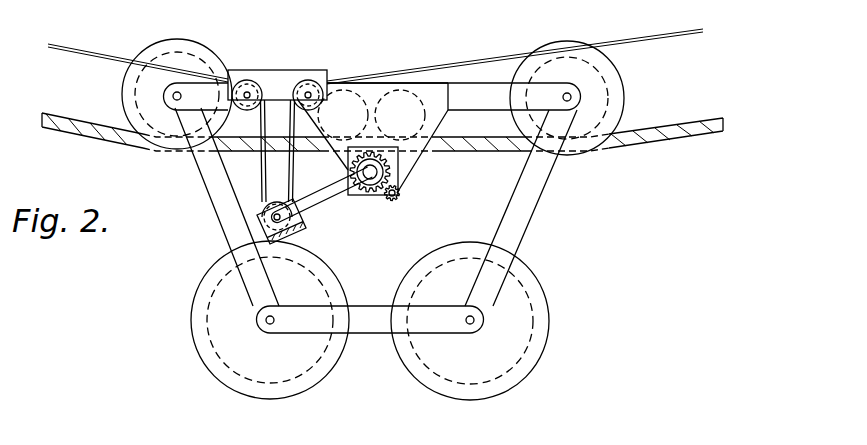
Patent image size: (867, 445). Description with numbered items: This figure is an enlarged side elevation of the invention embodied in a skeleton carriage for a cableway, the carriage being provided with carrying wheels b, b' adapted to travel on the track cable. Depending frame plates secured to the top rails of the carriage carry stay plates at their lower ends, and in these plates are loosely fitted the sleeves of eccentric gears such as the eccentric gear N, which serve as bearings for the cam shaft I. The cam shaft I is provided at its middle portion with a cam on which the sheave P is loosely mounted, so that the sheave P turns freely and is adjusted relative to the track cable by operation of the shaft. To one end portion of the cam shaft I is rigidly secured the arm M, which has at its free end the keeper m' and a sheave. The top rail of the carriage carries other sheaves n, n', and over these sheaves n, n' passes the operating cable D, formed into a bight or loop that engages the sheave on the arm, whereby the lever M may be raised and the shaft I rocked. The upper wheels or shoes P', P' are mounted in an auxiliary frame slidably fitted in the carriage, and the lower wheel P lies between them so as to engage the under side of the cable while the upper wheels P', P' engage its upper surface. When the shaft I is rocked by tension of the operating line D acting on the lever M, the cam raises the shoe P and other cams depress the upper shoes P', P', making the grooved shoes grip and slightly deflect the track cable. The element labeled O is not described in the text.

The operating cable D is at (636, 39).
The carrying wheel b' is at (146, 94).
The carrying wheel b is at (585, 98).
The sheave n is at (277, 108).
The upper wheels or shoes P' is at (378, 77).
The sheave n' is at (342, 120).
The eccentric gear N is at (398, 170).
The cam shaft I is at (370, 178).
The pinion O is at (399, 196).
The arm M is at (321, 199).
The sheave P is at (310, 193).
The keeper m' is at (308, 227).